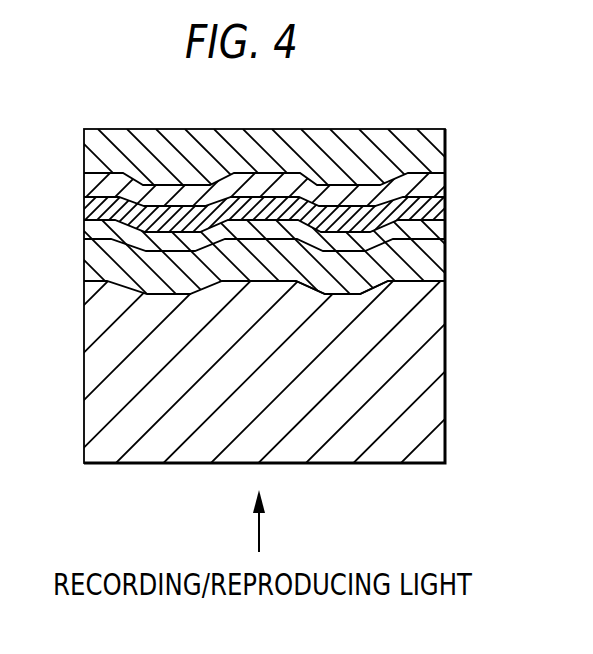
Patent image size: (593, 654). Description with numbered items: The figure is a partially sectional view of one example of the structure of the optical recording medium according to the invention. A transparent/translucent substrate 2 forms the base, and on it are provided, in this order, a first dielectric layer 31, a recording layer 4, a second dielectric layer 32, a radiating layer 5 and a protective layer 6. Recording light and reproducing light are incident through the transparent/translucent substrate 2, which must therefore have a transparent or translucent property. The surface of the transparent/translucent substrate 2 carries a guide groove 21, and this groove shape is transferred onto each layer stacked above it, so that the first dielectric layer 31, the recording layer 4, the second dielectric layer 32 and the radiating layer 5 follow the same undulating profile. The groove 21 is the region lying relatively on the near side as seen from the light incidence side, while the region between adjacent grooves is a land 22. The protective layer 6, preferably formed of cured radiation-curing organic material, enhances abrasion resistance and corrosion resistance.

The transparent/translucent substrate 2 is at (447, 345).
The groove 21 is at (360, 295).
The land 22 is at (277, 283).
The first dielectric layer 31 is at (447, 253).
The recording layer 4 is at (447, 228).
The second dielectric layer 32 is at (447, 205).
The radiating layer 5 is at (447, 182).
The protective layer 6 is at (447, 150).